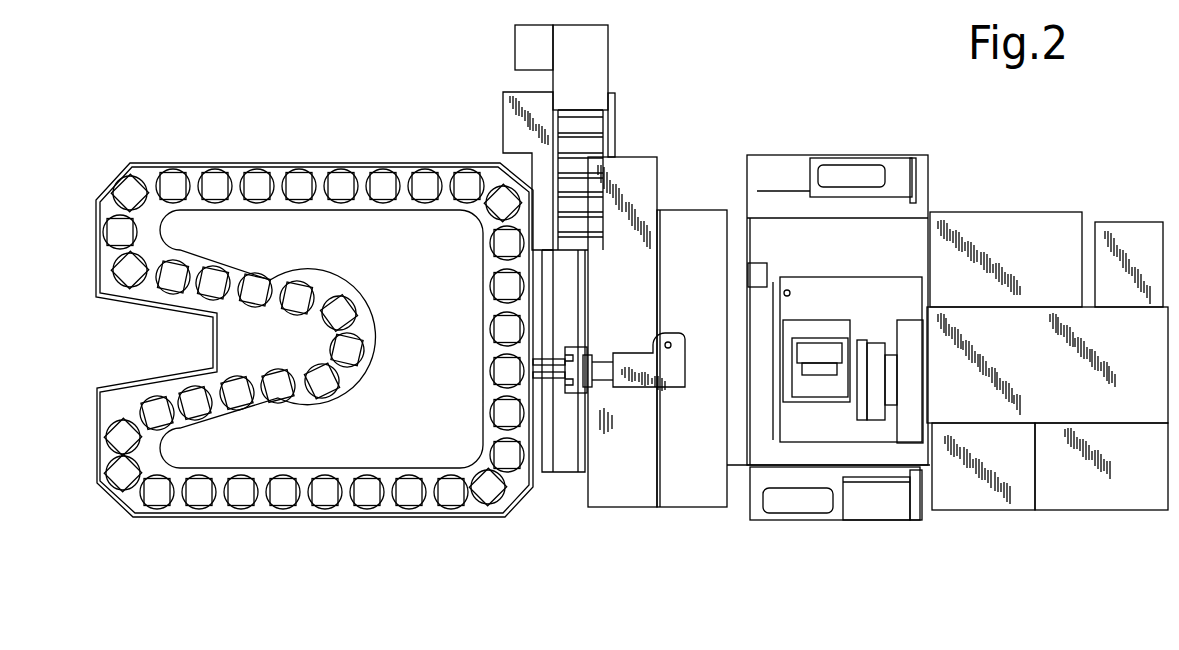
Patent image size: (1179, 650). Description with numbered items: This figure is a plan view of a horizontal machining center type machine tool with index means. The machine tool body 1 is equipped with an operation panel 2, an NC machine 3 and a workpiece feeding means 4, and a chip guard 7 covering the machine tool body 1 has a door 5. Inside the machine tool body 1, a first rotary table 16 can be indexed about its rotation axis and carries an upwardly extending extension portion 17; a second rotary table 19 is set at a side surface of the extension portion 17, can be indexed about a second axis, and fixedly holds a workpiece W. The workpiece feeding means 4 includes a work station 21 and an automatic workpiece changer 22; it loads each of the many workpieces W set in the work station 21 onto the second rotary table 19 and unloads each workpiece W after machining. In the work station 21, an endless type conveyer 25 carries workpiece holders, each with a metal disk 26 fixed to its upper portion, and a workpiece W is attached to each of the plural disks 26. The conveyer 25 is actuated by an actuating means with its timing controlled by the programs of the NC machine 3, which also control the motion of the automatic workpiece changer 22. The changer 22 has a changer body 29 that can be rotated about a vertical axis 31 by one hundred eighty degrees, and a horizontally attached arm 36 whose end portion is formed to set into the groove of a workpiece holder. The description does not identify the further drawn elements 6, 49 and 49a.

The machine tool body 1 is at (799, 150).
The operation panel 2 is at (989, 512).
The NC machine 3 is at (1080, 512).
The workpiece feeding means 4 is at (400, 130).
The door 5 is at (798, 515).
The spindle slide 6 is at (895, 167).
The chip guard 7 is at (873, 470).
The first rotary table 16 is at (832, 387).
The extension portion 17 is at (813, 350).
The second rotary table 19 is at (810, 370).
The work station 21 is at (332, 530).
The automatic workpiece changer 22 is at (608, 343).
The endless type conveyer 25 is at (514, 515).
The metal disk 26 is at (408, 508).
The changer body 29 is at (630, 390).
The vertical axis 31 is at (671, 343).
The arm 36 is at (553, 398).
The pallet 49 is at (178, 513).
The pallet at transfer position 49a is at (488, 372).
The workpiece W is at (452, 500).